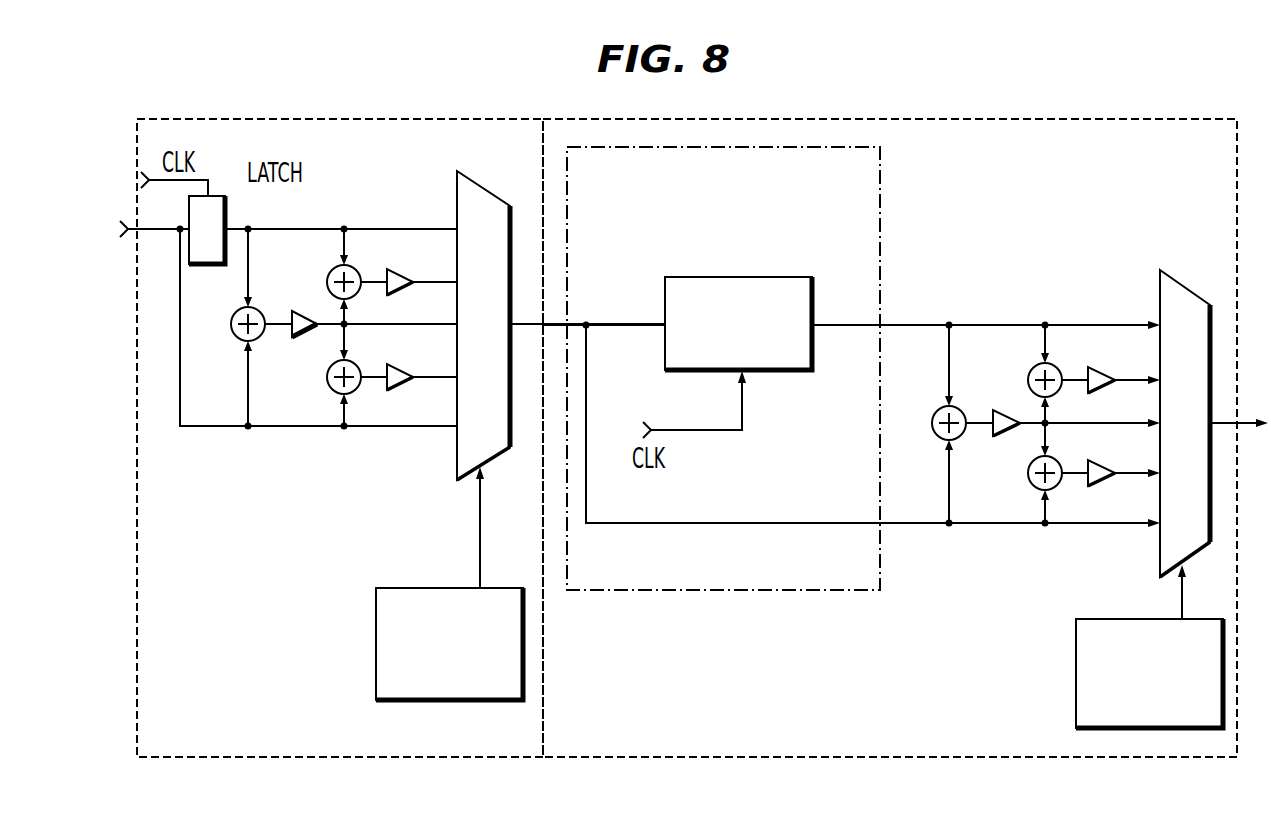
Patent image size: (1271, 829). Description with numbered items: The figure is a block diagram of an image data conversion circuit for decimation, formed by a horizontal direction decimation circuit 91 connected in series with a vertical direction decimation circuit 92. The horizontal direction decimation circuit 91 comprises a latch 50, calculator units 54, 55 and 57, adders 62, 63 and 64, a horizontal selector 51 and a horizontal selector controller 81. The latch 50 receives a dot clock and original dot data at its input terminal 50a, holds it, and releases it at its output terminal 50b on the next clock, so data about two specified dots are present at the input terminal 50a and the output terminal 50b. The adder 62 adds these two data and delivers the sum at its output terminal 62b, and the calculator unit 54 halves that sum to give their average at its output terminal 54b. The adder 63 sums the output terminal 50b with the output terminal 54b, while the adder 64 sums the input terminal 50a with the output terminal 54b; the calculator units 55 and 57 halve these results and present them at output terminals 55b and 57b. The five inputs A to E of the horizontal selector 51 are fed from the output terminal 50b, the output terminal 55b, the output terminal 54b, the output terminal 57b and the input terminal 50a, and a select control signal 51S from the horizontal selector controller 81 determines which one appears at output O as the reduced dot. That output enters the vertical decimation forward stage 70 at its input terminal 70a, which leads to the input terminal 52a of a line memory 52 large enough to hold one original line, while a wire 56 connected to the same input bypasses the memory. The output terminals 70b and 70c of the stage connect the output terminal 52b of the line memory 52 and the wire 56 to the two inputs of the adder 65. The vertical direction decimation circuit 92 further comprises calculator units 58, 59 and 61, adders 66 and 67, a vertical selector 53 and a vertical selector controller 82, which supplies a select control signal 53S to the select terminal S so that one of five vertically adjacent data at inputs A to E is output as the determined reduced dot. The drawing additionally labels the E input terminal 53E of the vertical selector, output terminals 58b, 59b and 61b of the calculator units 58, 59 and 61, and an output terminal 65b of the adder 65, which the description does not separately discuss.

The horizontal direction decimation circuit 91 is at (326, 119).
The vertical direction decimation circuit 92 is at (863, 119).
The latch 50 is at (243, 184).
The input terminal 50a is at (158, 210).
The output terminal 50b is at (317, 212).
The horizontal selector 51 is at (492, 195).
The select control signal 51S is at (480, 527).
The line memory 52 is at (757, 277).
The input terminal 52a is at (637, 324).
The output terminal 52b is at (845, 325).
The vertical selector 53 is at (1180, 290).
The vertical selector E input 53E is at (995, 528).
The select control signal 53S is at (1182, 593).
The calculator unit 54 is at (306, 334).
The output terminal 54b is at (333, 320).
The calculator unit 55 is at (398, 270).
The output terminal 55b is at (436, 282).
The wire 56 is at (792, 522).
The calculator unit 57 is at (387, 361).
The output terminal 57b is at (437, 377).
The calculator unit 58 is at (1006, 434).
The buffer output 58b is at (1033, 418).
The calculator unit 59 is at (1090, 362).
The buffer output 59b is at (1135, 380).
The calculator unit 61 is at (1088, 456).
The buffer output 61b is at (1137, 473).
The adder 62 is at (230, 332).
The output terminal 62b is at (266, 268).
The adder 63 is at (351, 264).
The adder 64 is at (326, 381).
The adder 65 is at (932, 427).
The adder input line 65b is at (972, 412).
The adder 66 is at (1055, 370).
The adder 67 is at (1027, 482).
The vertical decimation forward stage 70 is at (683, 592).
The input terminal 70a is at (550, 324).
The output terminal 70b is at (912, 325).
The output terminal 70c is at (910, 527).
The horizontal selector controller 81 is at (376, 632).
The vertical selector controller 82 is at (1076, 728).